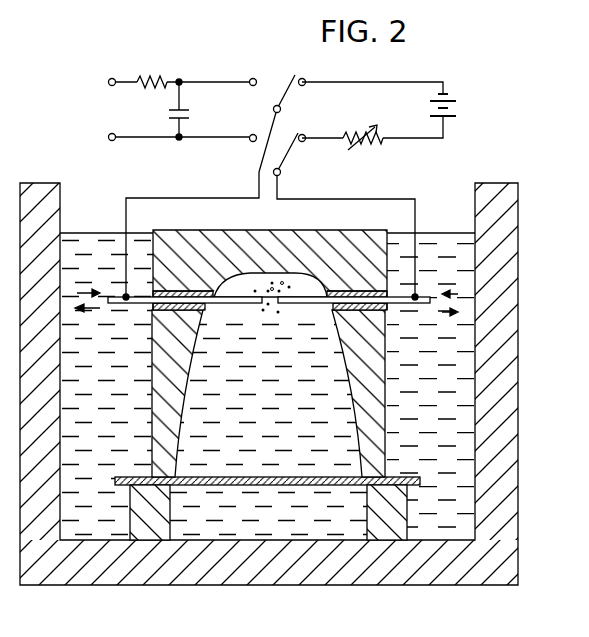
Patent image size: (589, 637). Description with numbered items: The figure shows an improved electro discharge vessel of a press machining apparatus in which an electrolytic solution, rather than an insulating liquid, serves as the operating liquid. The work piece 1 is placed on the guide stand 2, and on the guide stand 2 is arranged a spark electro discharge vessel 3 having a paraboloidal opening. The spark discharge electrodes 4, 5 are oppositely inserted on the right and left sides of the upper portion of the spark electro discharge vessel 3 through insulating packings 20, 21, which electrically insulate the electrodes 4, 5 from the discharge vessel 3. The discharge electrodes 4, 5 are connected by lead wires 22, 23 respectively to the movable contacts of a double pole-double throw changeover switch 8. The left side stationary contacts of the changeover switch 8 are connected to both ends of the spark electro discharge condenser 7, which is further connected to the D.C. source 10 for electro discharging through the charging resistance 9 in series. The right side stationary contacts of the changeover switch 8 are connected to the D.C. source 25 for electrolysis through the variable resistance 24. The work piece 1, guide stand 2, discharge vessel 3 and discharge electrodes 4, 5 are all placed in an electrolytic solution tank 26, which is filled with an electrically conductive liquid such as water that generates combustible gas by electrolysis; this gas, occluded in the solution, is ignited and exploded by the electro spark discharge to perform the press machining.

The work piece 1 is at (413, 477).
The guide stand 2 is at (170, 510).
The spark electro discharge vessel 3 is at (385, 378).
The spark discharge electrode 4 is at (250, 305).
The spark discharge electrode 5 is at (310, 305).
The spark electro discharge condenser 7 is at (189, 110).
The double pole-double throw changeover switch 8 is at (278, 114).
The charging resistance 9 is at (150, 90).
The D.C. source for electro discharging 10 is at (158, 108).
The insulating packing 20 is at (182, 292).
The insulating packing 21 is at (352, 292).
The lead wire 22 is at (188, 199).
The lead wire 23 is at (317, 200).
The variable resistance 24 is at (372, 143).
The D.C. source for electrolysis 25 is at (460, 110).
The electrolytic solution tank 26 is at (518, 440).